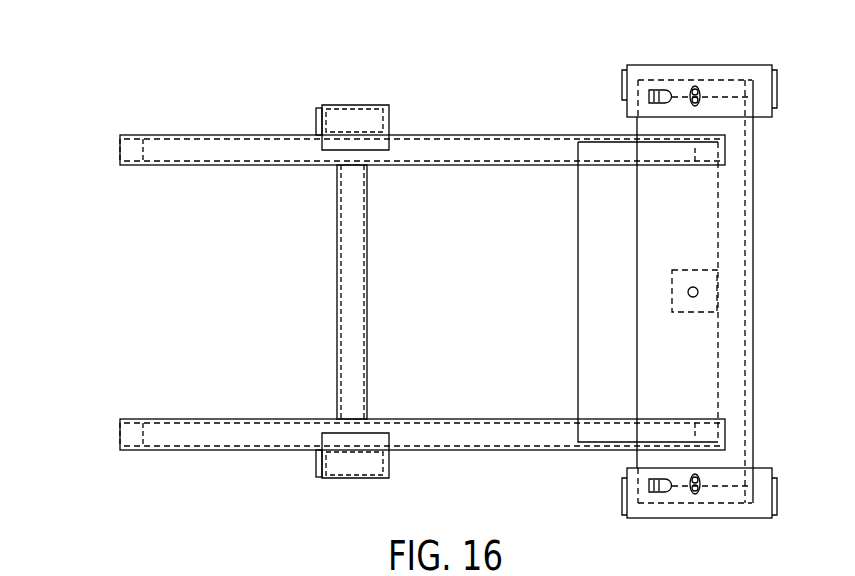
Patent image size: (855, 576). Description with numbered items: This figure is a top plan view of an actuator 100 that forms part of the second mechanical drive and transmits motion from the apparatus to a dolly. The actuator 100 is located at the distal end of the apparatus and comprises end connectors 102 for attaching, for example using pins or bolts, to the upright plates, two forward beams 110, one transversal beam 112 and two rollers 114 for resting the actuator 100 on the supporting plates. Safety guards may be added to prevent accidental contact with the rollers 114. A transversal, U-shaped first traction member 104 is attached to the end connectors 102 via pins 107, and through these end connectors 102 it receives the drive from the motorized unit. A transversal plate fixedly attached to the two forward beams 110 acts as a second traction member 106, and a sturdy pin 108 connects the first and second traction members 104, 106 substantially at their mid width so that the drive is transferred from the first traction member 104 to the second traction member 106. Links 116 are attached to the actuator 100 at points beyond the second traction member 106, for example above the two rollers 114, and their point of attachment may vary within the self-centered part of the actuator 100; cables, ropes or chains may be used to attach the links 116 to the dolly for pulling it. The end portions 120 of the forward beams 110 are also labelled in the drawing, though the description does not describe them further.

The actuator 100 is at (122, 85).
The end connectors 102 is at (773, 93).
The first traction member 104 is at (755, 268).
The second traction member 106 is at (600, 225).
The pins 107 is at (693, 87).
The pin 108 is at (688, 295).
The forward beams 110 is at (191, 134).
The transversal beam 112 is at (368, 290).
The rollers 114 is at (317, 121).
The links 116 is at (346, 118).
The end portion 120 is at (131, 163).